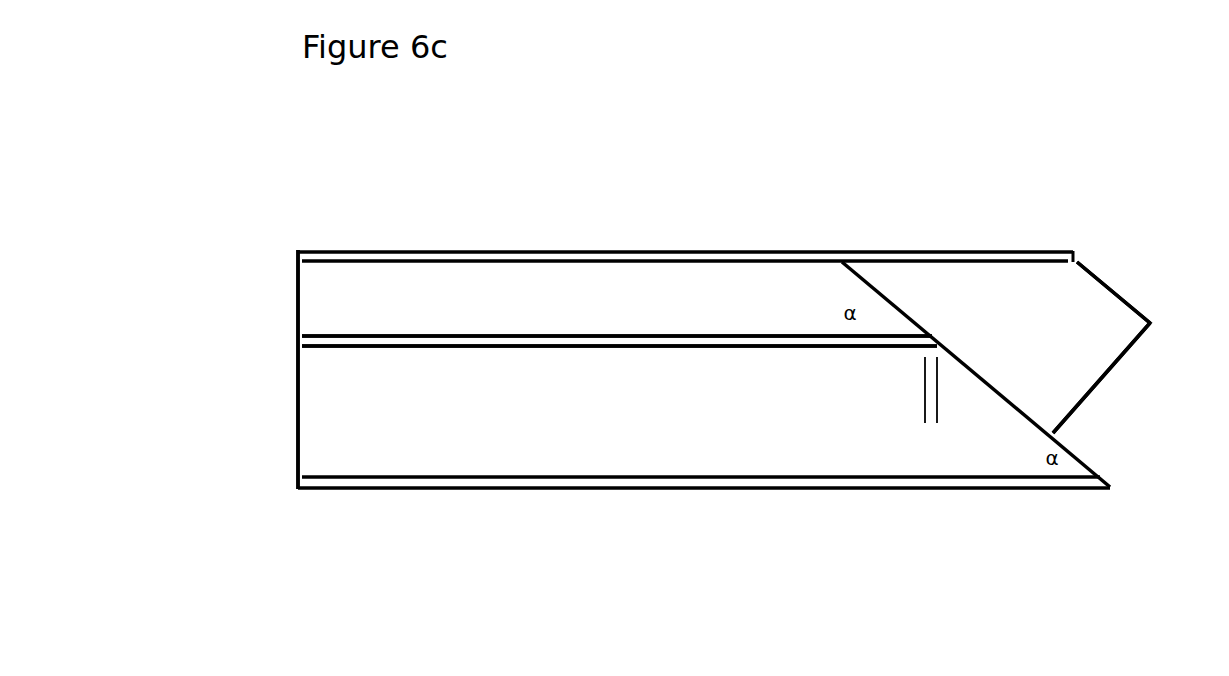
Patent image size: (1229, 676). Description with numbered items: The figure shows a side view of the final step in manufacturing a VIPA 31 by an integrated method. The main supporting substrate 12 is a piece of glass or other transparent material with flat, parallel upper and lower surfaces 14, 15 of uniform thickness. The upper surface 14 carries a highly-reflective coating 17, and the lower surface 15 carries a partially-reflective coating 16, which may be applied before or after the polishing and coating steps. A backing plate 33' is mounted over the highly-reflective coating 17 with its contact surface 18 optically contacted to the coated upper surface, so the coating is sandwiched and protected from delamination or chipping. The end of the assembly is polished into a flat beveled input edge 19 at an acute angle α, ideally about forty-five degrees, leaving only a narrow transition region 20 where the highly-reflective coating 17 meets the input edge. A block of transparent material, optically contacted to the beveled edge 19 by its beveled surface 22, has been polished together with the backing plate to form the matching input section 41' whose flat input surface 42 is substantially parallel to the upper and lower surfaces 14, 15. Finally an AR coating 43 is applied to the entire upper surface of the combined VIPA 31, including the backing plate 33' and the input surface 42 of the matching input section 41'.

The main supporting substrate 12 is at (538, 430).
The upper surface 14 is at (392, 352).
The lower surface 15 is at (420, 471).
The partially-reflective coating 16 is at (620, 490).
The highly-reflective coating 17 is at (307, 343).
The contact surface 18 is at (342, 331).
The beveled input edge 19 is at (982, 392).
The transition region 20 is at (930, 424).
The beveled surface 22 is at (1022, 401).
The VIPA 31 is at (642, 156).
The finished backing plate 33' is at (617, 308).
The matching input section 41' is at (1077, 347).
The input surface 42 is at (1048, 265).
The AR coating 43 is at (746, 250).